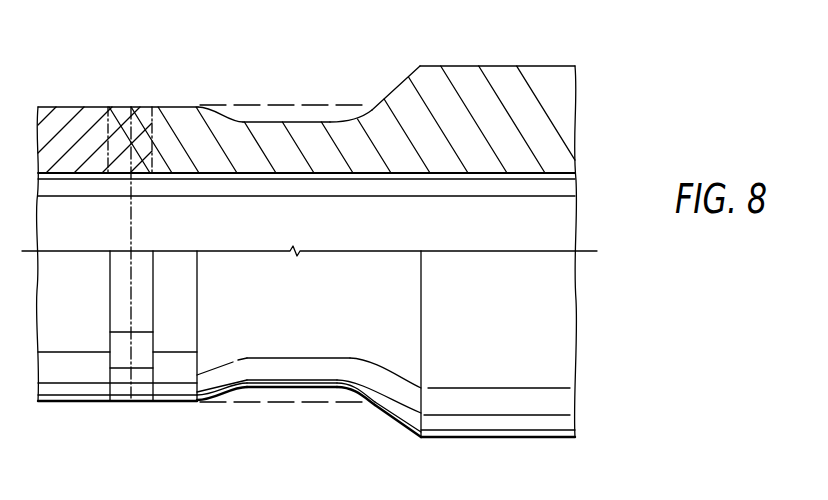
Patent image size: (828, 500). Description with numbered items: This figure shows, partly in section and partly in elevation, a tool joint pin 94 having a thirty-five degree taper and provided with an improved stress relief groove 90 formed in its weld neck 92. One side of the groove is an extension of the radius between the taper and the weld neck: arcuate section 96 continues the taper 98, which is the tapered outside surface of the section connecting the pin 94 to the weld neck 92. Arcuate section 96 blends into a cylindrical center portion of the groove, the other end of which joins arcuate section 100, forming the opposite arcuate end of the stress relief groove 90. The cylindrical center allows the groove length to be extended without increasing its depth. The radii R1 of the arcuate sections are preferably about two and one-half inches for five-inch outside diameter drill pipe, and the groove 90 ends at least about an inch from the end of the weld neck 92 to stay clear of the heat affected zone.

The stress relief groove 90 is at (300, 104).
The weld neck 92 is at (172, 106).
The tool joint pin 94 is at (506, 65).
The arcuate section 96 is at (363, 108).
The taper 98 is at (403, 77).
The arcuate section 100 is at (215, 108).
The radius of arcuate section R1 is at (240, 119).